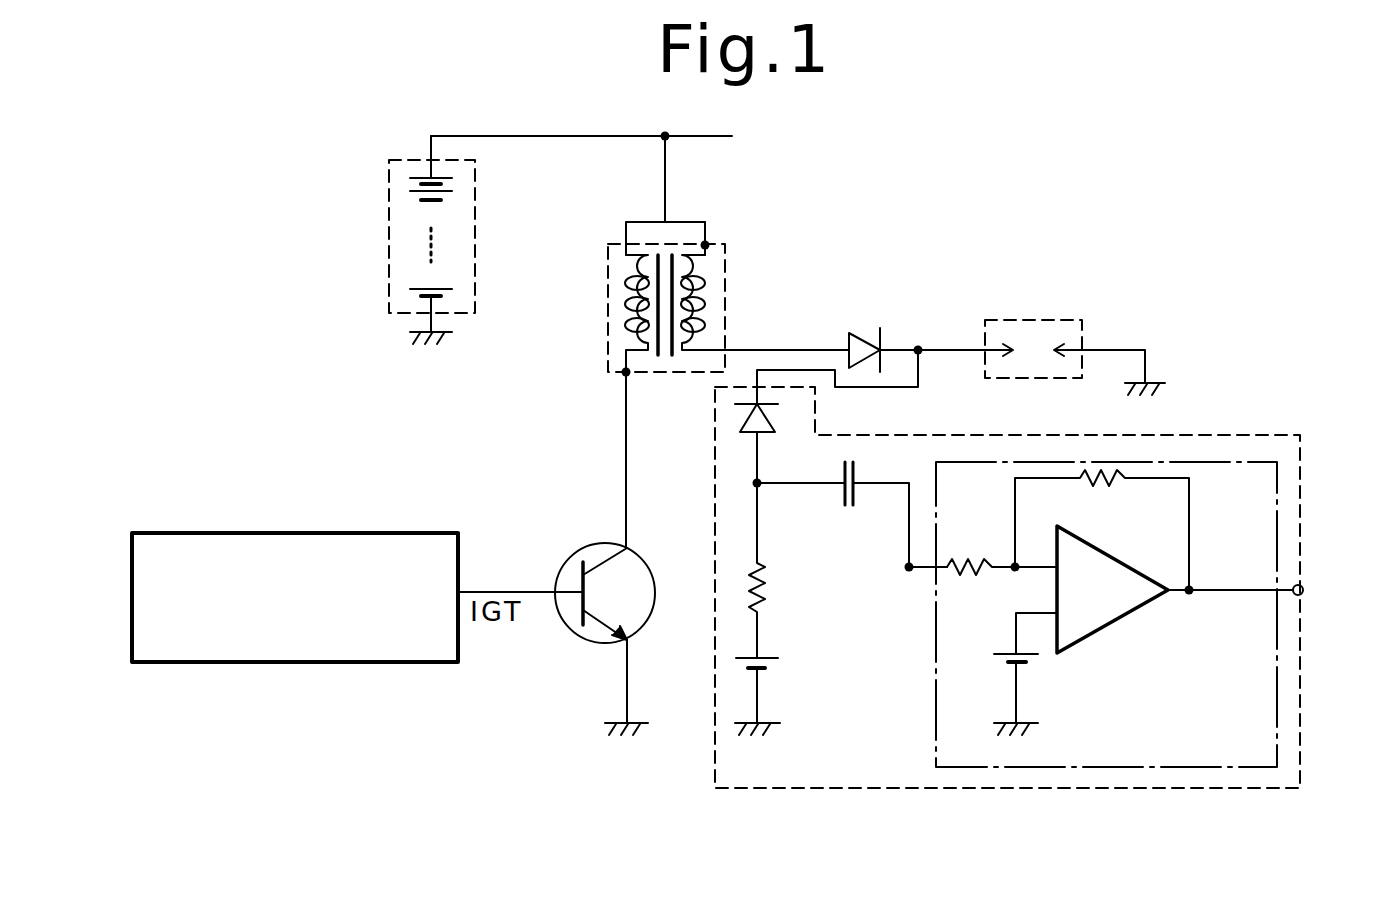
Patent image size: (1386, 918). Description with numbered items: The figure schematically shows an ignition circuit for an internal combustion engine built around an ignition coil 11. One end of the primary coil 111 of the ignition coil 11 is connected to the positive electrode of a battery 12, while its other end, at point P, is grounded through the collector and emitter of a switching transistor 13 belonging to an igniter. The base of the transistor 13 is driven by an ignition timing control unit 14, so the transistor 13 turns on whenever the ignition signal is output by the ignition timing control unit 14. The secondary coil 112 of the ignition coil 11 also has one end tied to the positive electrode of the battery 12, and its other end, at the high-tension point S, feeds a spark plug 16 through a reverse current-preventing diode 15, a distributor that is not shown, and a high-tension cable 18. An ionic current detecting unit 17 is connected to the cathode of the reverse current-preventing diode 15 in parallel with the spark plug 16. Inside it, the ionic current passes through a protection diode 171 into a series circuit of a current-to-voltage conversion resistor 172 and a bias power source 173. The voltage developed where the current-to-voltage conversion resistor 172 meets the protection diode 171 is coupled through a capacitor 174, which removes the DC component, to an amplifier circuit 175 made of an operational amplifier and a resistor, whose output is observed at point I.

The ignition coil 11 is at (685, 256).
The primary coil 111 is at (626, 290).
The secondary coil 112 is at (703, 283).
The battery 12 is at (389, 228).
The switching transistor 13 is at (634, 557).
The ignition timing control unit 14 is at (418, 532).
The reverse current-preventing diode 15 is at (862, 339).
The spark plug 16 is at (1083, 328).
The ionic current detecting unit 17 is at (1302, 507).
The protection diode 171 is at (768, 437).
The current-to-voltage conversion resistor 172 is at (773, 585).
The bias power source 173 is at (775, 668).
The capacitor 174 is at (845, 510).
The amplifier circuit 175 is at (934, 722).
The high-tension cable 18 is at (947, 352).
The point S is at (705, 245).
The point P is at (626, 375).
The point I is at (909, 571).